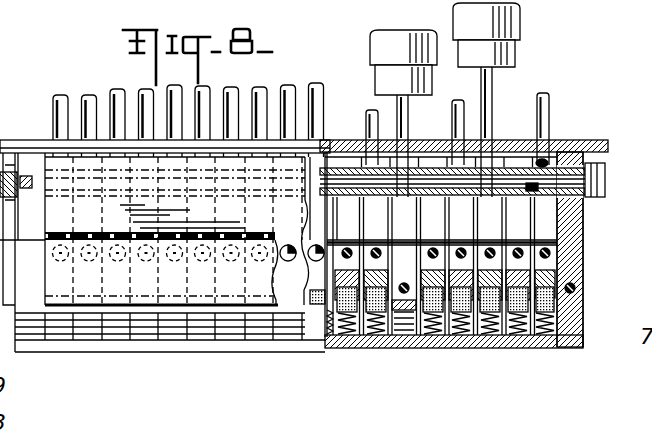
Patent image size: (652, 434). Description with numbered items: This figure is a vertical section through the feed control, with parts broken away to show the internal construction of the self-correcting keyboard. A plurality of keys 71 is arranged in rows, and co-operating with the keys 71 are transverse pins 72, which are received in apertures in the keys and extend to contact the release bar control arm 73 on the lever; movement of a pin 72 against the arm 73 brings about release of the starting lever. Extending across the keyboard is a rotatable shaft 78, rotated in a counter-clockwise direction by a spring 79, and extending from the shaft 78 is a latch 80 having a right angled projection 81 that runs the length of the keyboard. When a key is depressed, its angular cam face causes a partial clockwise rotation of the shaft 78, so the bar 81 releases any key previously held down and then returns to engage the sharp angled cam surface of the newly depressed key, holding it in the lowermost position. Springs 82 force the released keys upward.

The keys 71 is at (408, 118).
The transverse pins 72 is at (310, 292).
The release bar control arm 73 is at (208, 298).
The rotatable shaft 78 is at (590, 140).
The spring 79 is at (550, 148).
The latch 80 is at (548, 213).
The right angled projection 81 is at (560, 243).
The springs 82 is at (488, 340).